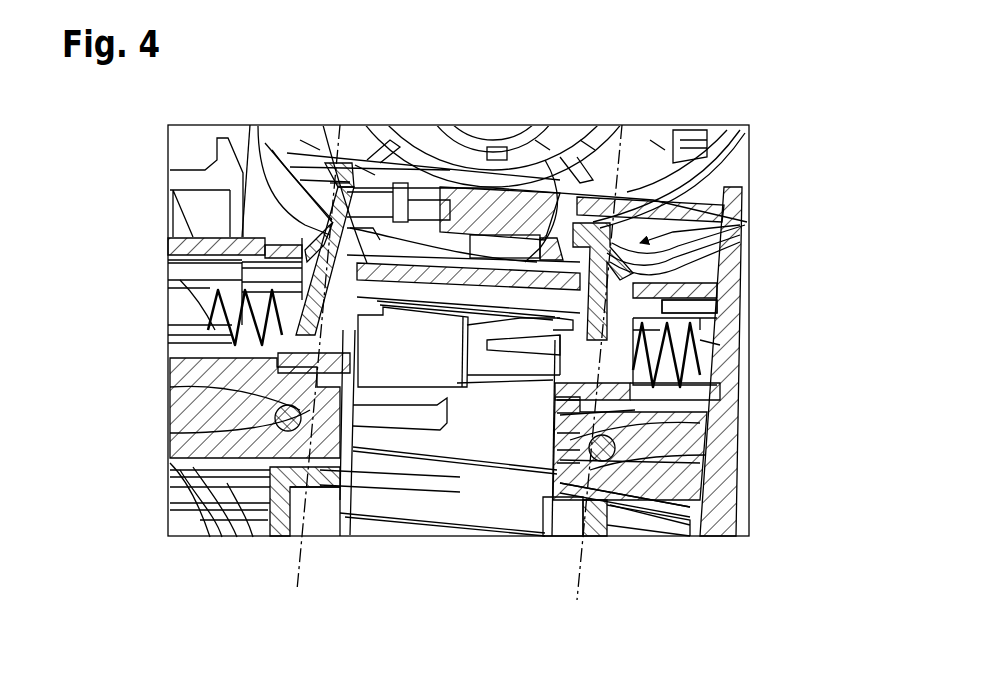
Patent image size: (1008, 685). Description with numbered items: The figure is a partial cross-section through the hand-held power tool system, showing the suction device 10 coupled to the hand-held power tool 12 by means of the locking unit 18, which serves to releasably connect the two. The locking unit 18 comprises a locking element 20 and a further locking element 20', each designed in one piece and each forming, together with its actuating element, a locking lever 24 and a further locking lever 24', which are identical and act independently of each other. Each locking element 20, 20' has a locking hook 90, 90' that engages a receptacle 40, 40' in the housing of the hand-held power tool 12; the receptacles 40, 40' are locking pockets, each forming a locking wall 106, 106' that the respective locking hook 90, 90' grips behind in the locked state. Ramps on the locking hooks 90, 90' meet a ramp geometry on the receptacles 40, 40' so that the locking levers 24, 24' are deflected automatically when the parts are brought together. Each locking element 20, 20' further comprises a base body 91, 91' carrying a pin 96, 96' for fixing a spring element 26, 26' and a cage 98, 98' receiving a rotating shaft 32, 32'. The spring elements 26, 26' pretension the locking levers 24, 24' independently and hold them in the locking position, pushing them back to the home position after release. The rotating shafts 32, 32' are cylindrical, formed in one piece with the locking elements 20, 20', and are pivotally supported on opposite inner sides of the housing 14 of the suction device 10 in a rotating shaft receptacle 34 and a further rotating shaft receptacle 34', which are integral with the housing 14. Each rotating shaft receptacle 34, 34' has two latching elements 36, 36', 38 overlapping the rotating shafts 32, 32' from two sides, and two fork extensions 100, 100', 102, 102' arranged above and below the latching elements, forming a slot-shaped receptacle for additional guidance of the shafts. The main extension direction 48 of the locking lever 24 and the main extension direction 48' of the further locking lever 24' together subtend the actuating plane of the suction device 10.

The suction device 10 is at (143, 507).
The hand-held power tool 12 is at (492, 103).
The housing 14 is at (730, 245).
The locking unit 18 is at (725, 222).
The locking element 20 is at (686, 281).
The further locking element 20' is at (298, 222).
The locking lever 24 is at (585, 570).
The further locking lever 24' is at (286, 555).
The spring element 26 is at (744, 352).
The further spring element 26' is at (195, 314).
The rotating shaft 32 is at (676, 448).
The further rotating shaft 32' is at (224, 409).
The rotating shaft receptacle 34 is at (519, 469).
The further rotating shaft receptacle 34' is at (388, 464).
The latching element 36 is at (685, 429).
The latching element 36' is at (209, 402).
The latching element 38 is at (210, 465).
The receptacle 40 is at (594, 111).
The further receptacle 40' is at (342, 108).
The main extension direction 48 is at (563, 384).
The main extension direction 48' is at (337, 384).
The locking hook 90 is at (657, 111).
The further locking hook 90' is at (311, 111).
The base body 91 is at (731, 306).
The base body 91' is at (306, 565).
The pin 96 is at (677, 377).
The pin 96' is at (170, 340).
The cage 98 is at (680, 480).
The cage 98' is at (390, 534).
The fork extension 100 is at (713, 459).
The fork extension 100' is at (182, 449).
The fork extension 102 is at (648, 550).
The fork extension 102' is at (219, 554).
The locking wall 106 is at (547, 111).
The locking wall 106' is at (382, 123).